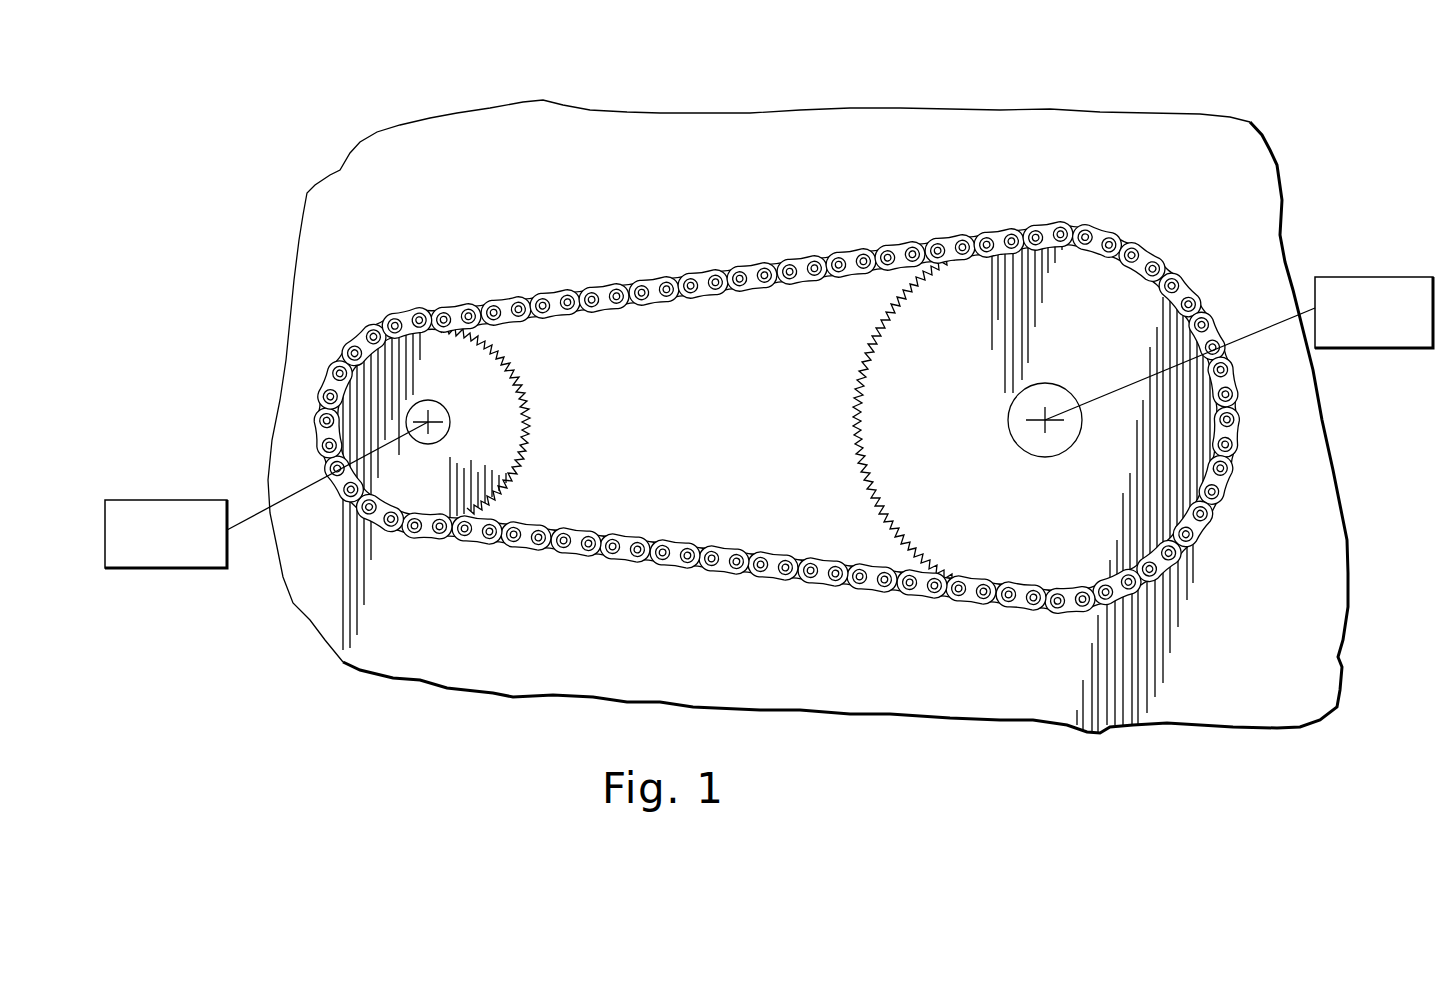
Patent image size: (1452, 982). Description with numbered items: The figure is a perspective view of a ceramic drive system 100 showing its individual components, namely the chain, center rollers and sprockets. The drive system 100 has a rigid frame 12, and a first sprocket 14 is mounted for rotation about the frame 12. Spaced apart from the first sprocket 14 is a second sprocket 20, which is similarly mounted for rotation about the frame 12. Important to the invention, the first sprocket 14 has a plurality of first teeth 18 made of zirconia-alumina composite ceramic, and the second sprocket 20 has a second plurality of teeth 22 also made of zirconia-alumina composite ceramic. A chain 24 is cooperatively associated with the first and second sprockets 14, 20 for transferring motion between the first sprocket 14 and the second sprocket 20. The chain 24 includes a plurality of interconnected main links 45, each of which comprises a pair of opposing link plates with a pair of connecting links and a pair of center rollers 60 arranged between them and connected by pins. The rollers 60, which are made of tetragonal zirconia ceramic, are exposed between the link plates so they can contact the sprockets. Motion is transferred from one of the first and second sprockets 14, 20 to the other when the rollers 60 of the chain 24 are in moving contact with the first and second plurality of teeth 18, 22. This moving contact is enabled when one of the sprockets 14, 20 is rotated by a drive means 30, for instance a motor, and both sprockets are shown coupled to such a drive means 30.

The ceramic drive system 100 is at (1197, 51).
The rigid frame 12 is at (1266, 113).
The first sprocket 14 is at (474, 486).
The plurality of first teeth 18 is at (522, 392).
The second sprocket 20 is at (1002, 483).
The second plurality of teeth 22 is at (866, 468).
The chain 24 is at (776, 388).
The main links 45 is at (1003, 231).
The center rollers 60 is at (669, 277).
The drive means 30 is at (178, 570).